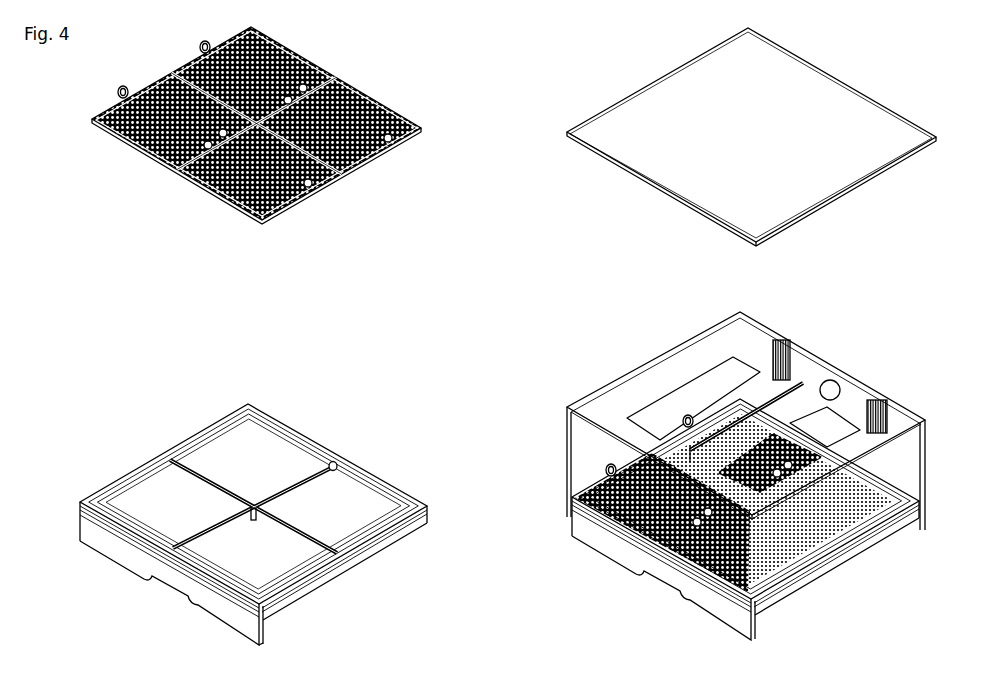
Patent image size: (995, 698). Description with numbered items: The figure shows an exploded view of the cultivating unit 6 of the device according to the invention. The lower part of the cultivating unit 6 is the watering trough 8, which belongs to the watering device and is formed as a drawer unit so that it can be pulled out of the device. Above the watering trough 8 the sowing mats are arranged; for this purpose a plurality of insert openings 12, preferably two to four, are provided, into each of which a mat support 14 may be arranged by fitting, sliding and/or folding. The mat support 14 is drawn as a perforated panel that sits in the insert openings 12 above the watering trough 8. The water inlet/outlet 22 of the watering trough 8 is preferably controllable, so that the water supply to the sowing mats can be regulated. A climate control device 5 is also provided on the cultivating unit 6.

The mesh panel 14 is at (190, 193).
The tray 8 is at (150, 455).
The support frame 12 is at (292, 437).
The ring 22 is at (336, 463).
The housing 6 is at (618, 368).
The opening 5 is at (828, 385).